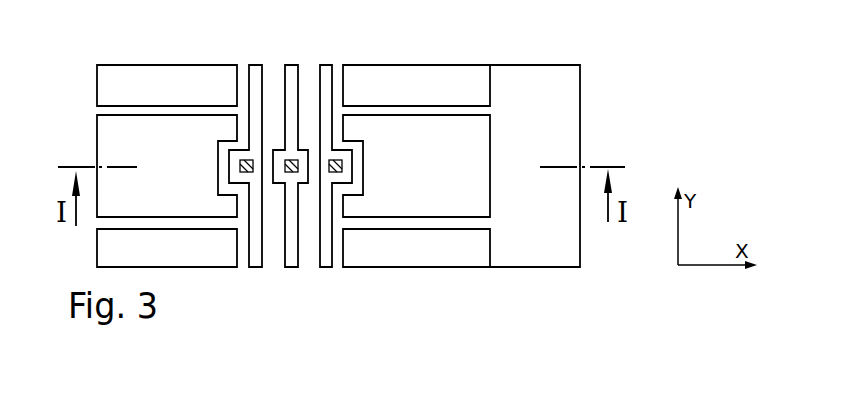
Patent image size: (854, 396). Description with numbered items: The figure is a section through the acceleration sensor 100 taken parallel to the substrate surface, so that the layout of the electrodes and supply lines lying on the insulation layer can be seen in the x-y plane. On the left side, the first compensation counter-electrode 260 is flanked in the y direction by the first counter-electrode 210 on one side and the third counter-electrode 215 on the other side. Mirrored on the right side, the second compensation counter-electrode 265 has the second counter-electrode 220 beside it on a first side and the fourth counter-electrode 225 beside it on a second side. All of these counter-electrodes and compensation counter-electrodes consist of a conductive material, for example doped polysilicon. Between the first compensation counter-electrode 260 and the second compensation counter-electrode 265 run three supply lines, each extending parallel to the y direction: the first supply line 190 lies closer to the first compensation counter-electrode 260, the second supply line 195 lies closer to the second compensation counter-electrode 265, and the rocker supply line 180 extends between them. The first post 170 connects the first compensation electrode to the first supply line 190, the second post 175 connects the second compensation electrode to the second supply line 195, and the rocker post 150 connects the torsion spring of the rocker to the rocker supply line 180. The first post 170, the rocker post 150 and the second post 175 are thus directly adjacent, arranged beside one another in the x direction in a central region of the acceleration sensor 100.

The acceleration sensor 100 is at (657, 63).
The rocker post 150 is at (283, 177).
The first post 170 is at (236, 177).
The second post 175 is at (344, 177).
The rocker supply line 180 is at (293, 77).
The first supply line 190 is at (252, 77).
The second supply line 195 is at (325, 78).
The first counter-electrode 210 is at (115, 77).
The third counter-electrode 215 is at (118, 252).
The second counter-electrode 220 is at (475, 78).
The fourth counter-electrode 225 is at (476, 250).
The first compensation counter-electrode 260 is at (110, 141).
The second compensation counter-electrode 265 is at (472, 146).